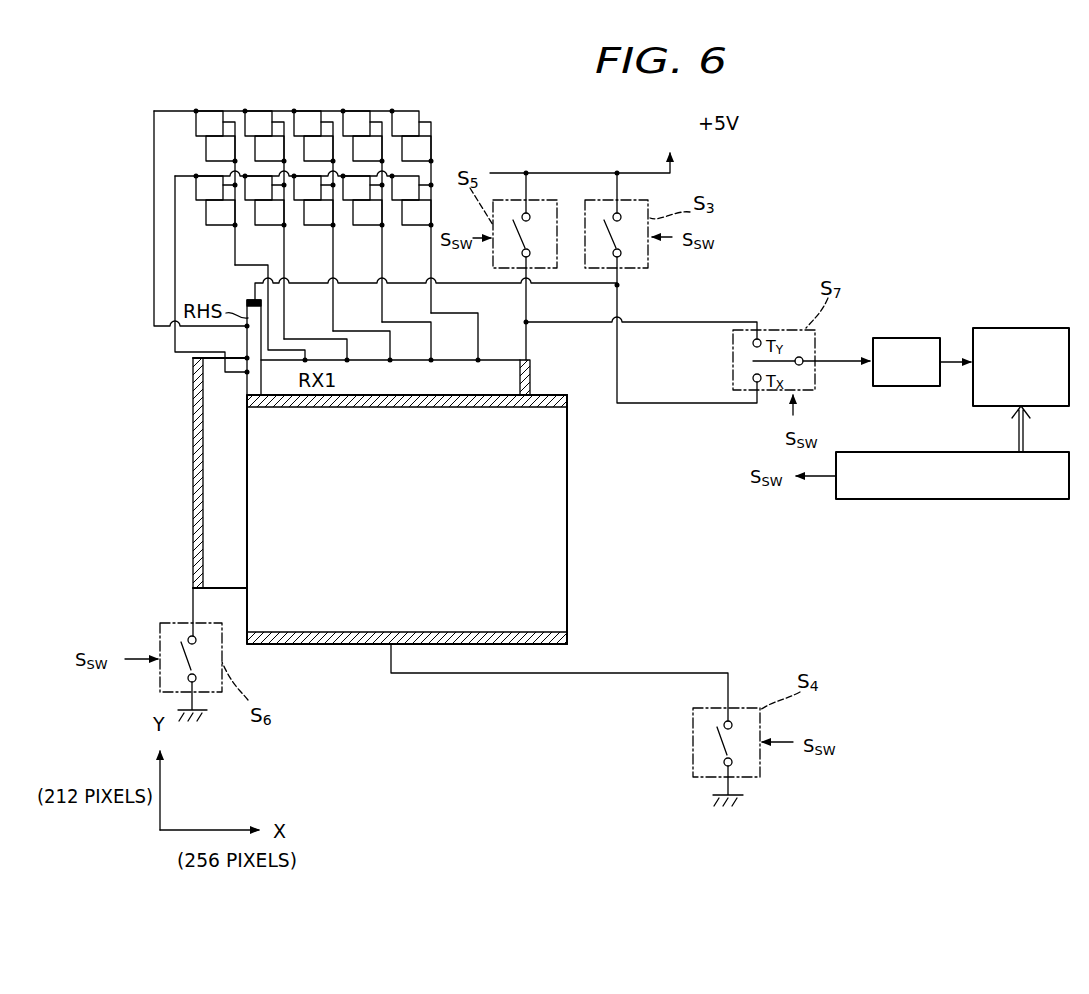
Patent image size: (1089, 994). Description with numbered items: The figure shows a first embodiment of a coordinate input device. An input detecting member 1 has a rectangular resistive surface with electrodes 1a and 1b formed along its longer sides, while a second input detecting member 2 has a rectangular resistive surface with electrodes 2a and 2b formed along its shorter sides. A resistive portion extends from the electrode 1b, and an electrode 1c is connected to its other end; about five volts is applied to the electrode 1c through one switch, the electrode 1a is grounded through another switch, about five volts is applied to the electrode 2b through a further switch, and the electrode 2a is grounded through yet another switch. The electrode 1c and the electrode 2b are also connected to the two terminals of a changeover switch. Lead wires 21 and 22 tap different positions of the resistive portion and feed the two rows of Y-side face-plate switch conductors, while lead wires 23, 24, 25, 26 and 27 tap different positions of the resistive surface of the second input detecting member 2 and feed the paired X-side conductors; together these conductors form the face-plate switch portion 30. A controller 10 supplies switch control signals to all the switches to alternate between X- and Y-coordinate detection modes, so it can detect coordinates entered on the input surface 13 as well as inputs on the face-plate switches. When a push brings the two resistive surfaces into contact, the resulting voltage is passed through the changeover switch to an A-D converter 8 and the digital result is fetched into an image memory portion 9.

The input detecting member 1 is at (567, 510).
The electrode 1a is at (548, 632).
The electrode 1b is at (537, 405).
The electrode 1c is at (255, 300).
The input detecting member 2 is at (212, 398).
The electrode 2a is at (198, 485).
The electrode 2b is at (532, 372).
The A-D converter 8 is at (897, 338).
The image memory portion 9 is at (1028, 328).
The controller 10 is at (990, 500).
The input surface 13 is at (553, 548).
The lead wire 21 is at (154, 298).
The lead wire 22 is at (173, 232).
The lead wire 23 is at (305, 359).
The lead wire 24 is at (347, 361).
The lead wire 25 is at (390, 361).
The lead wire 26 is at (432, 326).
The lead wire 27 is at (478, 340).
The face-plate switch portion 30 is at (440, 147).